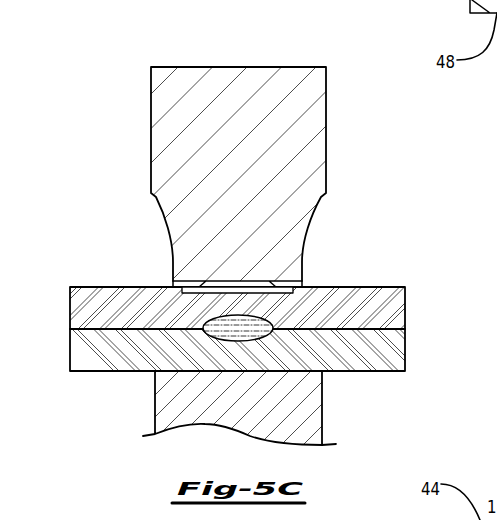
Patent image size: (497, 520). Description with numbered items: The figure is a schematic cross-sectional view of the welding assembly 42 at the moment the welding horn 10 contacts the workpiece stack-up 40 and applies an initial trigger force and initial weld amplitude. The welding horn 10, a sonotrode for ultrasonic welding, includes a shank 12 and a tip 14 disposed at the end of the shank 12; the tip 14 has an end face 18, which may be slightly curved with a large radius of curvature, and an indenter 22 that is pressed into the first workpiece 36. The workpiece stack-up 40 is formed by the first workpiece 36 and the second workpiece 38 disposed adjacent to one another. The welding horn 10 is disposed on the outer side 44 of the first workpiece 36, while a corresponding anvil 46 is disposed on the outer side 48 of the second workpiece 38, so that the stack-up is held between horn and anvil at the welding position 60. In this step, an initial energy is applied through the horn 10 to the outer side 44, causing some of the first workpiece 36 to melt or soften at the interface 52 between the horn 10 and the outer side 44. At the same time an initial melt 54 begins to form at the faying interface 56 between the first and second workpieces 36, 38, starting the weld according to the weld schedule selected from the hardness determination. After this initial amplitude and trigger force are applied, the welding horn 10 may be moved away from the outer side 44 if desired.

The welding horn 10 is at (140, 38).
The shank 12 is at (278, 198).
The tip 14 is at (322, 249).
The end face 18 is at (173, 283).
The indenter 22 is at (292, 287).
The first workpiece 36 is at (387, 294).
The second workpiece 38 is at (377, 362).
The workpiece stack-up 40 is at (422, 325).
The welding assembly 42 is at (370, 167).
The outer side of the first workpiece 44 is at (82, 287).
The anvil 46 is at (292, 413).
The outer side of the second workpiece 48 is at (82, 371).
The interface 52 is at (195, 299).
The initial melt 54 is at (239, 330).
The faying interface 56 is at (280, 314).
The welding position 60 is at (155, 253).